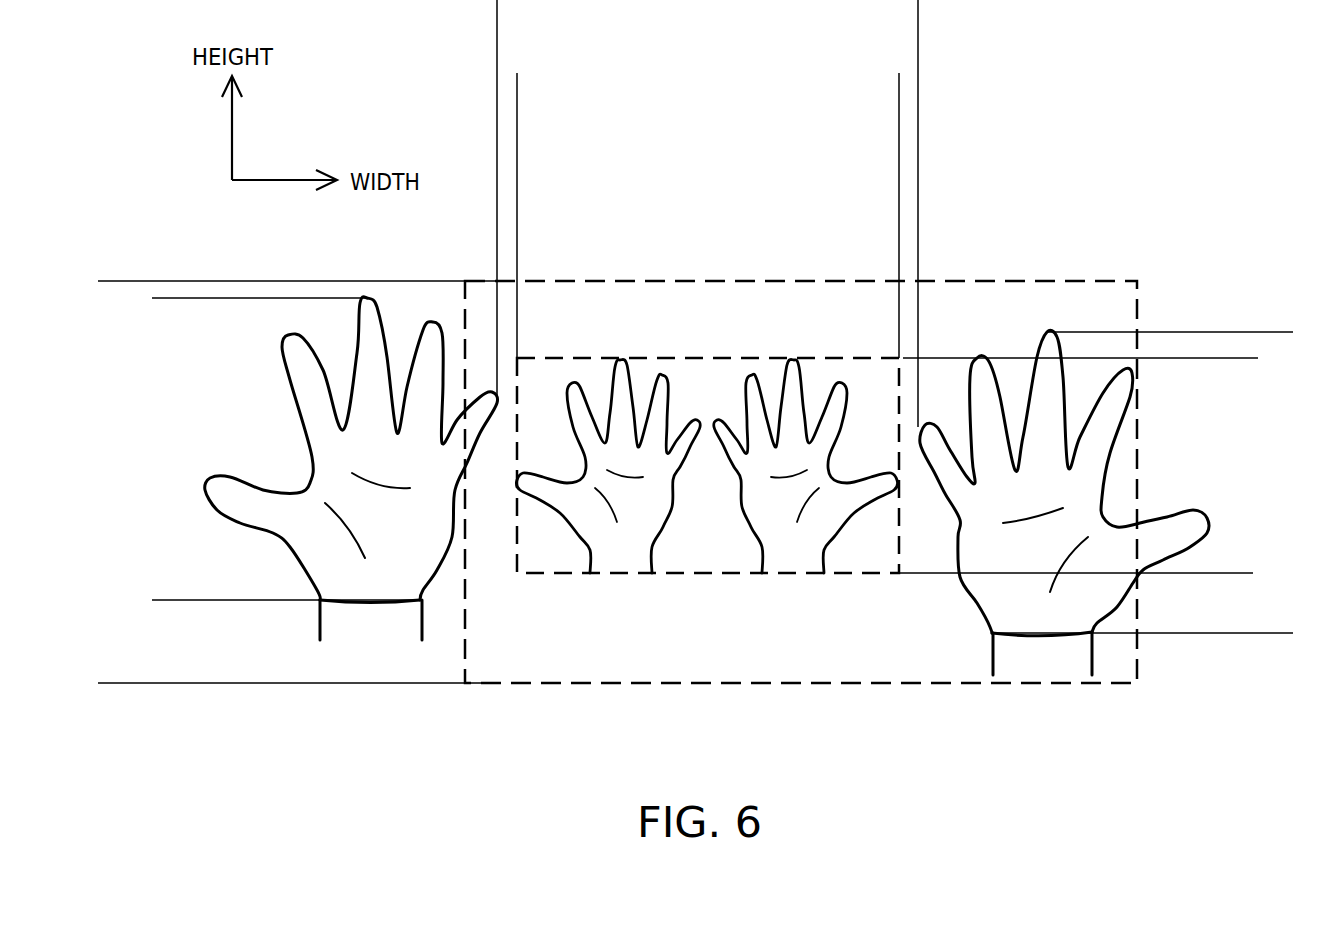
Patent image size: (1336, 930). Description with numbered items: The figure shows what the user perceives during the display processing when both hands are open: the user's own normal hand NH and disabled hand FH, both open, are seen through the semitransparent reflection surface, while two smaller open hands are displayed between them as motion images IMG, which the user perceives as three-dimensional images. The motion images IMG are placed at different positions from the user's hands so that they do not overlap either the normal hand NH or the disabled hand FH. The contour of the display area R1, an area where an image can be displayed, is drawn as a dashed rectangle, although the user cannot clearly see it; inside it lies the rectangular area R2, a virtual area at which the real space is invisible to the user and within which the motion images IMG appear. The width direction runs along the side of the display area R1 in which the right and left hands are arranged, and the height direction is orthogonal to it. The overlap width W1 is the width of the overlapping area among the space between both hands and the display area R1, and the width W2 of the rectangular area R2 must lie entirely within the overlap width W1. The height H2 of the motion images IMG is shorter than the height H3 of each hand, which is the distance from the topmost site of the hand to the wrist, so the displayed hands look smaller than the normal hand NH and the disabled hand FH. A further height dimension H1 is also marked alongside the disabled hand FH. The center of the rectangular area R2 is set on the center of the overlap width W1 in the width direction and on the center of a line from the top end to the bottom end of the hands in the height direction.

The overlap width W1 is at (918, 40).
The width of the rectangular area W2 is at (899, 140).
The display area R1 is at (836, 280).
The rectangular area R2 is at (694, 357).
The height of first region H1 is at (125, 281).
The height of the motion images H2 is at (1236, 358).
The height of each hand H3 is at (184, 298).
The disabled hand FH is at (368, 563).
The normal hand NH is at (1057, 610).
The motion images IMG is at (800, 553).